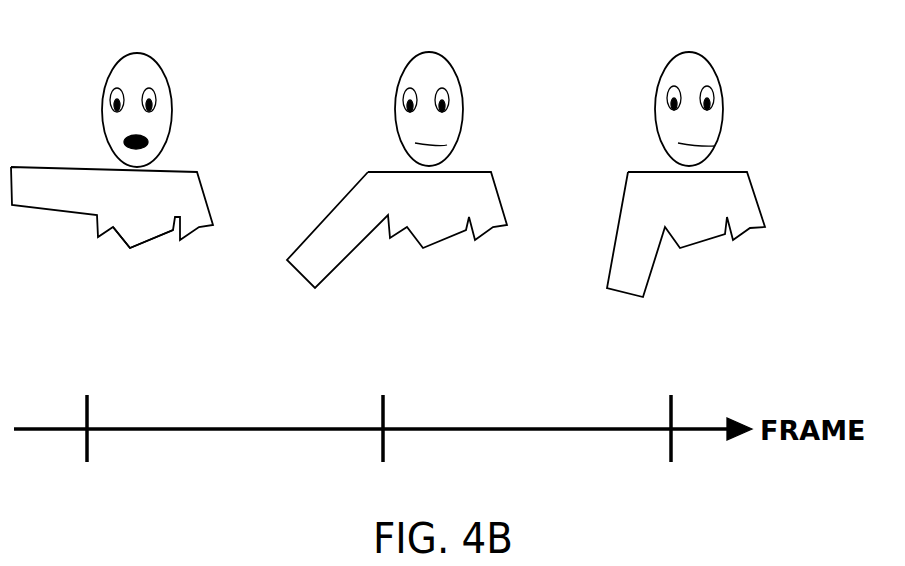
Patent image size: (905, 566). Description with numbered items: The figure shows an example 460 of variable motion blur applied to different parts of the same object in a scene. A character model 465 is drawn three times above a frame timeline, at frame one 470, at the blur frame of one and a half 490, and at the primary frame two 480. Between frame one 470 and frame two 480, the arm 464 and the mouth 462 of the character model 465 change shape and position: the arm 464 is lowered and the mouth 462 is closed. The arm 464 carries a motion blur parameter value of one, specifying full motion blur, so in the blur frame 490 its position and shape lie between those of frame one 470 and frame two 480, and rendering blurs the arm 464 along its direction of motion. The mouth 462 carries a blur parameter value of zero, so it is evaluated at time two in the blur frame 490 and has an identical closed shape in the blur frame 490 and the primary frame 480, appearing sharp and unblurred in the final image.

The example 460 is at (109, 93).
The mouth 462 is at (148, 142).
The arm 464 is at (54, 193).
The character model 465 is at (137, 233).
The frame 1 470 is at (90, 430).
The blur frame 1.5 490 is at (380, 430).
The frame 2 480 is at (668, 431).